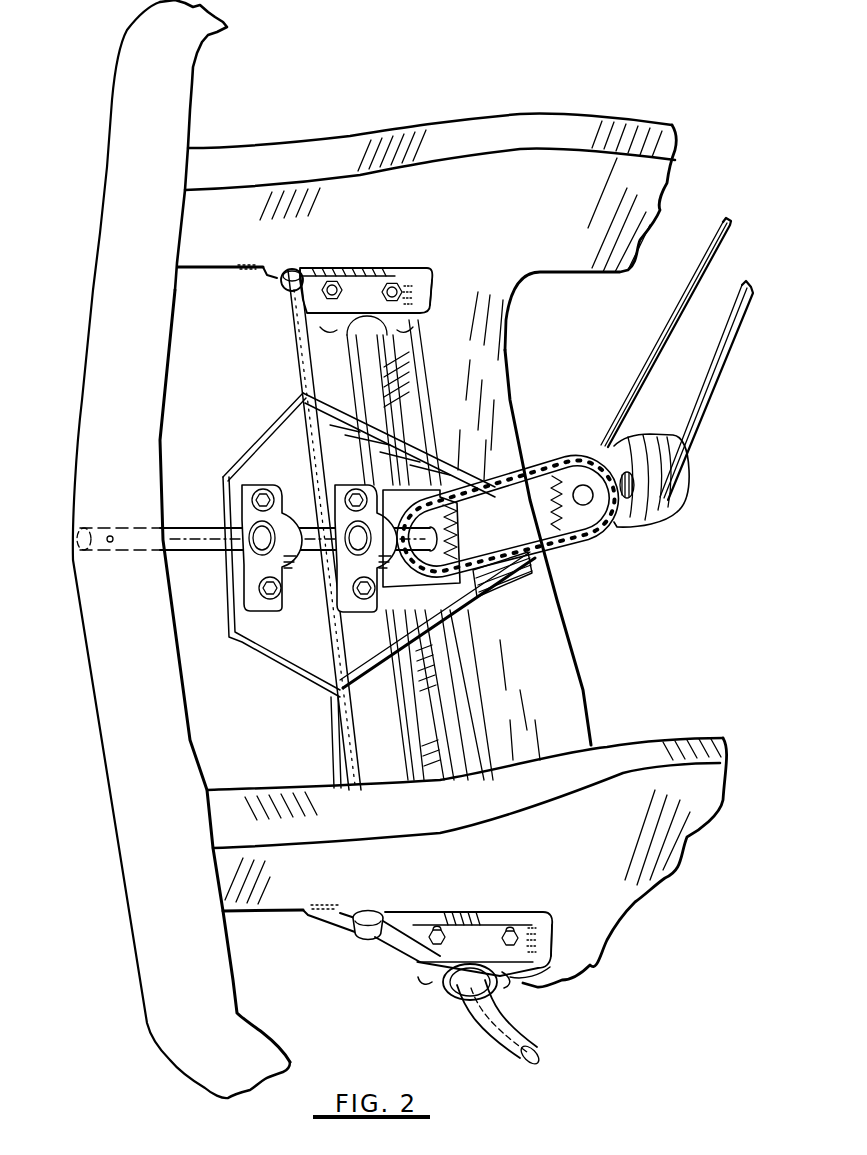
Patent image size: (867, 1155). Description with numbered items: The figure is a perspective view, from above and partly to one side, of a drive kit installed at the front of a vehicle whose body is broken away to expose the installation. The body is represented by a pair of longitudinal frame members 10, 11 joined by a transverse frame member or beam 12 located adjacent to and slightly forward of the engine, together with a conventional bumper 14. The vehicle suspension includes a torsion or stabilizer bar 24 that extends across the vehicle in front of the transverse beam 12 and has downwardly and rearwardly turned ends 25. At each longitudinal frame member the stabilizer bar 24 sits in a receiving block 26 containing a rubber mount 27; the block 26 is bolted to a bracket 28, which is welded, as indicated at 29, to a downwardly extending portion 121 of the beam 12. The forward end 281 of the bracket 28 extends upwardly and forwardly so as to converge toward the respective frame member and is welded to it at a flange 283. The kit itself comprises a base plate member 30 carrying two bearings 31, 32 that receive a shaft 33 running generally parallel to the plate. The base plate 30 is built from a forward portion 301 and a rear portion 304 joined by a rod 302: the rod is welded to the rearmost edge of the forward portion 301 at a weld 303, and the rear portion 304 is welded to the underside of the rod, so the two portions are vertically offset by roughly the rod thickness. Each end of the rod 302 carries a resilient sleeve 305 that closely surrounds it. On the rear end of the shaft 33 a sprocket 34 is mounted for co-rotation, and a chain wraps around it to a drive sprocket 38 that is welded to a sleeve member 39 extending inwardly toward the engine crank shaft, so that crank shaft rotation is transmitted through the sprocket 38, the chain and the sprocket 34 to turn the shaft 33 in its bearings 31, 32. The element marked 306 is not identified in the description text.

The longitudinal frame member 10 is at (528, 127).
The longitudinal frame member 11 is at (640, 750).
The transverse frame member 12 is at (550, 680).
The bumper 14 is at (143, 800).
The stabilizer bar 24 is at (436, 738).
The turned end 25 is at (490, 1025).
The receiving block 26 is at (497, 992).
The rubber mount 27 is at (437, 990).
The bracket 28 is at (350, 292).
The weld 29 is at (410, 300).
The base plate member 30 is at (285, 672).
The bearing 31 is at (252, 567).
The bearing 32 is at (340, 583).
The shaft 33 is at (200, 506).
The sprocket 34 is at (440, 525).
The sprocket 38 is at (566, 547).
The sleeve member 39 is at (583, 487).
The downwardly extending portion 121 is at (424, 286).
The forward end 281 is at (383, 947).
The flange 283 is at (246, 272).
The forward portion 301 is at (254, 459).
The rod 302 is at (290, 335).
The weld 303 is at (305, 420).
The rear portion 304 is at (413, 478).
The sleeve 305 is at (300, 242).
The gearbox plate 306 is at (442, 582).